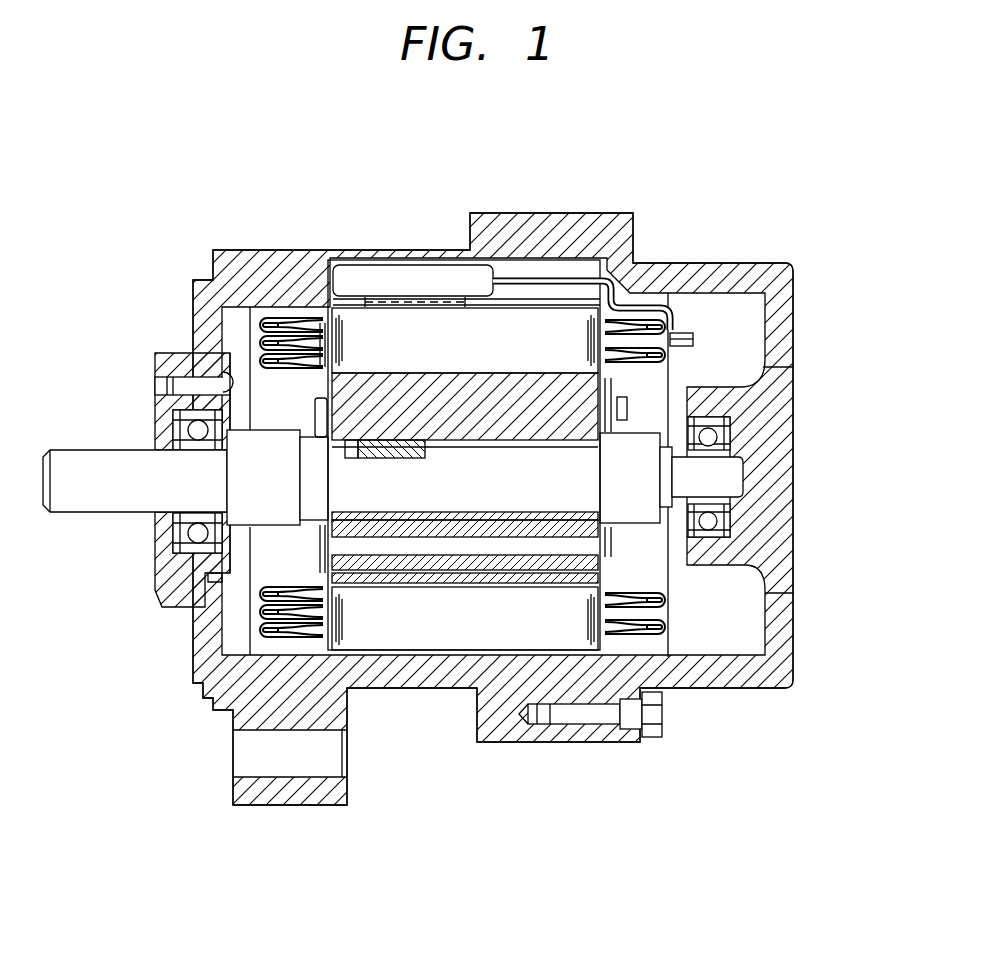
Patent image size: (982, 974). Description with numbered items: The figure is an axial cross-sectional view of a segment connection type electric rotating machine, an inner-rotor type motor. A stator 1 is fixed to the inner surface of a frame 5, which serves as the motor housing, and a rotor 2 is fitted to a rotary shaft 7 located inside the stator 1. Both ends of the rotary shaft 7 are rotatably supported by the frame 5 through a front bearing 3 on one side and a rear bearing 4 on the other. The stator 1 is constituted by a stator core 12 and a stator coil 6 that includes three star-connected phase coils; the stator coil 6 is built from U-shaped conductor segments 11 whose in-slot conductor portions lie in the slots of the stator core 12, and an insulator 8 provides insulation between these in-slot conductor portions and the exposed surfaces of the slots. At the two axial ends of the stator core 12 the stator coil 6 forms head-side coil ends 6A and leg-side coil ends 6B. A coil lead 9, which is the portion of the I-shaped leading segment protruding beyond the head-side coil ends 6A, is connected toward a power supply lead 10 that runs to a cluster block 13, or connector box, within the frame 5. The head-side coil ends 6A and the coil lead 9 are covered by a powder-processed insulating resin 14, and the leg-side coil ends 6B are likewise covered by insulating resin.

The stator 1 is at (438, 655).
The rotor 2 is at (322, 390).
The front bearing 3 is at (174, 527).
The rear bearing 4 is at (735, 503).
The frame 5 is at (225, 270).
The stator coil 6 is at (252, 628).
The head-side coil ends 6A is at (687, 312).
The leg-side coil ends 6B is at (308, 318).
The rotary shaft 7 is at (96, 473).
The insulator 8 is at (632, 630).
The coil lead 9 is at (668, 355).
The power supply lead 10 is at (543, 278).
The U-shaped conductor segment 11 is at (665, 612).
The stator core 12 is at (404, 613).
The cluster block 13 is at (407, 278).
The powder-processed insulating resin 14 is at (693, 332).